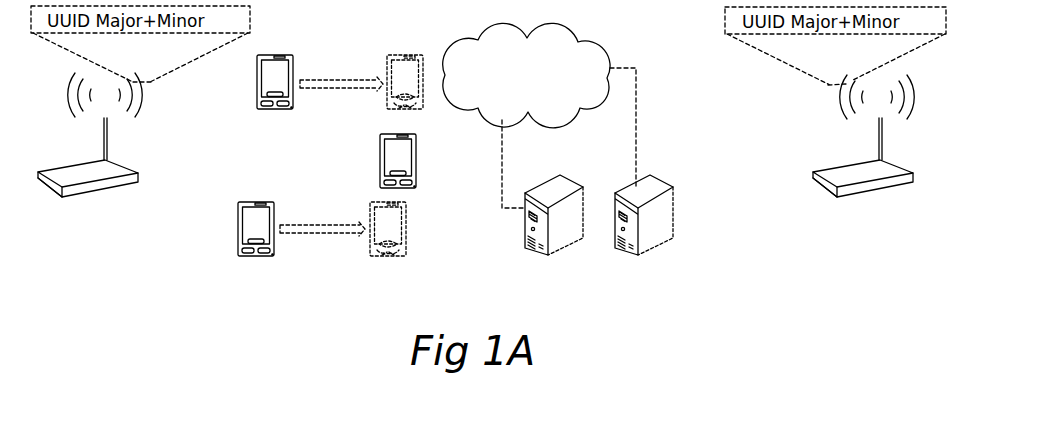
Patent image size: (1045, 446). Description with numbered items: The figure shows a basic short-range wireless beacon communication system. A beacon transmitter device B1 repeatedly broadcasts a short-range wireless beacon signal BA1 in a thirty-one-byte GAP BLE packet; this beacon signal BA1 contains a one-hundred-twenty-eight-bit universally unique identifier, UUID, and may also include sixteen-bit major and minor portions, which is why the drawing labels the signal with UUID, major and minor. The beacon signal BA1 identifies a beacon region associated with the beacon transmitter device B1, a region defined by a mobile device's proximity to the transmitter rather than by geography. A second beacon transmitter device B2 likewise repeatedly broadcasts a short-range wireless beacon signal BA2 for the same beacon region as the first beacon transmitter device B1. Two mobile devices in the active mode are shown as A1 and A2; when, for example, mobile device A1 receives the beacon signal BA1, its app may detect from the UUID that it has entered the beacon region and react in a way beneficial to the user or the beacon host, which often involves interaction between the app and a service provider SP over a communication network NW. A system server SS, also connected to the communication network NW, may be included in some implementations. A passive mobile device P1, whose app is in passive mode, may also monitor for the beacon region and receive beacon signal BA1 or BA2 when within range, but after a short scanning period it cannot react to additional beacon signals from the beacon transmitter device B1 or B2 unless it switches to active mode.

The beacon transmitter device B1 is at (52, 189).
The second beacon transmitter device B2 is at (827, 189).
The beacon signal BA1 is at (146, 106).
The beacon signal BA2 is at (839, 101).
The mobile device A1 is at (263, 77).
The mobile device A2 is at (388, 155).
The passive mobile device P1 is at (246, 222).
The communication network NW is at (546, 78).
The service provider SP is at (525, 216).
The system server SS is at (667, 221).